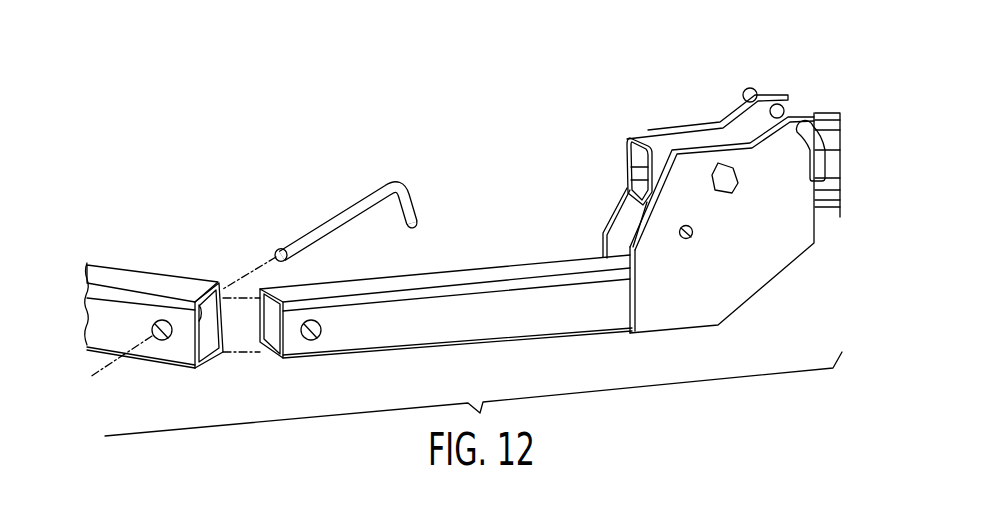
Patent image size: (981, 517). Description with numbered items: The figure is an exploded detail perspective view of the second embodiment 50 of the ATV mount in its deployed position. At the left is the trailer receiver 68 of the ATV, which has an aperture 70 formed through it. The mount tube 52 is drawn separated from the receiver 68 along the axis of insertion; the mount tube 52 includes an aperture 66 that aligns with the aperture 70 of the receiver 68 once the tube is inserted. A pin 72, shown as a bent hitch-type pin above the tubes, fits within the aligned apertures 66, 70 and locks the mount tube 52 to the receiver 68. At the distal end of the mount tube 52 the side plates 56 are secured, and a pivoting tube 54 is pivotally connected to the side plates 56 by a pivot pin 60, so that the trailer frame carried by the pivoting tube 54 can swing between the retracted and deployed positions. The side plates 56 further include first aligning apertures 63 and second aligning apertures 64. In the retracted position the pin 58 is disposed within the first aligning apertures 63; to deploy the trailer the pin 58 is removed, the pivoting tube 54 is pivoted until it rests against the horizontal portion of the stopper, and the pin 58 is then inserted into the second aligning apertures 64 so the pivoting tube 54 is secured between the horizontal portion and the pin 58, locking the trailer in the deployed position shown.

The second embodiment 50 is at (484, 165).
The mount tube 52 is at (492, 273).
The pivoting tube 54 is at (635, 162).
The side plates 56 is at (625, 223).
The pin 58 is at (753, 90).
The pivot pin 60 is at (717, 166).
The first aligning apertures 63 is at (693, 232).
The second aligning apertures 64 is at (786, 108).
The aperture 66 is at (311, 341).
The trailer receiver 68 is at (158, 283).
The aperture 70 is at (162, 341).
The pin 72 is at (327, 222).